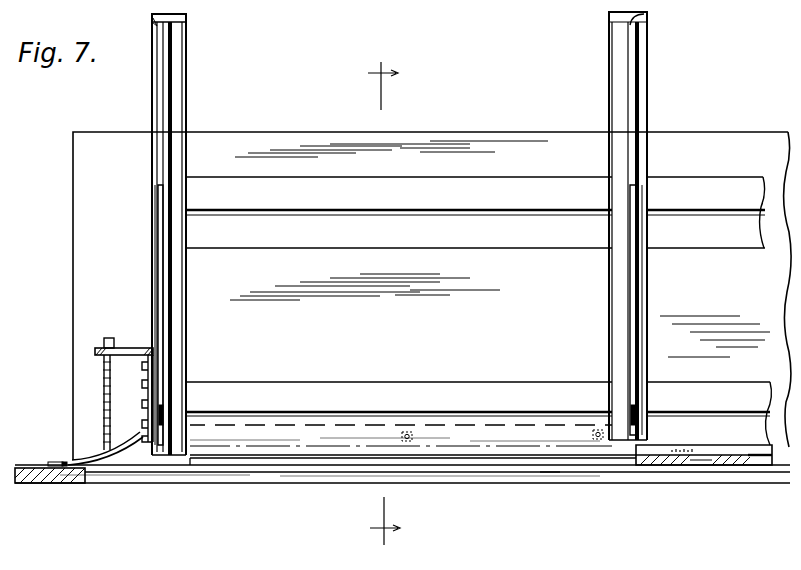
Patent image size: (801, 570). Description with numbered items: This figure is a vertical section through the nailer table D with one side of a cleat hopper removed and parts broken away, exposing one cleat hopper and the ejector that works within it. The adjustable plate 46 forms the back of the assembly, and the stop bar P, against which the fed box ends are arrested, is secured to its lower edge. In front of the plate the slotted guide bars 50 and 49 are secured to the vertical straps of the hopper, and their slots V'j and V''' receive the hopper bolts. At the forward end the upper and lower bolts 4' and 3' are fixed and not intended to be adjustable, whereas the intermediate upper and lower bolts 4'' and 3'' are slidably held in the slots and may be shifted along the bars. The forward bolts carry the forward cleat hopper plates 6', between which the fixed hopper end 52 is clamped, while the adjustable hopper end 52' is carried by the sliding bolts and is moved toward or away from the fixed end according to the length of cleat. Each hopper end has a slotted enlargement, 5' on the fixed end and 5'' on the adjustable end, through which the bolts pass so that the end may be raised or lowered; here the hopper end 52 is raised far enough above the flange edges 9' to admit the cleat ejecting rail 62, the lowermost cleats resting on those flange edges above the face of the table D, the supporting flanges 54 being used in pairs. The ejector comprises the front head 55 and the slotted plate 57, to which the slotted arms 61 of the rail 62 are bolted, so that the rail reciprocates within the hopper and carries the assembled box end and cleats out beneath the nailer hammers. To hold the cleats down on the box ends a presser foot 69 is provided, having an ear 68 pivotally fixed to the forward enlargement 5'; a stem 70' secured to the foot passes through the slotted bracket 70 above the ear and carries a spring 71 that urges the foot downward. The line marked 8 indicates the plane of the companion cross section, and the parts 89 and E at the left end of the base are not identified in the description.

The lower forward bolt 3' is at (185, 394).
The lower intermediate bolt 3'' is at (659, 404).
The upper forward bolt 4' is at (140, 315).
The upper intermediate bolt 4'' is at (659, 308).
The slotted enlargement 5' is at (139, 315).
The guide strip 5'' is at (662, 310).
The cleat hopper plate 6' is at (386, 260).
The section line 8 is at (384, 303).
The flange edge 9' is at (402, 487).
The adjustable plate 46 is at (481, 132).
The slotted guide bar 49 is at (528, 388).
The slotted guide bar 50 is at (476, 212).
The hopper end 52 is at (152, 234).
The adjustable hopper end 52' is at (648, 226).
The supporting flange 54 is at (378, 447).
The front head 55 is at (661, 466).
The slotted plate 57 is at (736, 470).
The slotted arm 61 is at (730, 455).
The cleat ejecting rail 62 is at (696, 448).
The ear 68 is at (143, 420).
The presser foot 69 is at (88, 459).
The slotted bracket 70 is at (124, 330).
The stem 70' is at (103, 316).
The spring 71 is at (104, 420).
The clip 89 is at (40, 466).
The end block E is at (27, 486).
The stop bar P is at (190, 464).
The table D is at (549, 478).
The slot V'j is at (468, 198).
The slot V''' is at (465, 406).